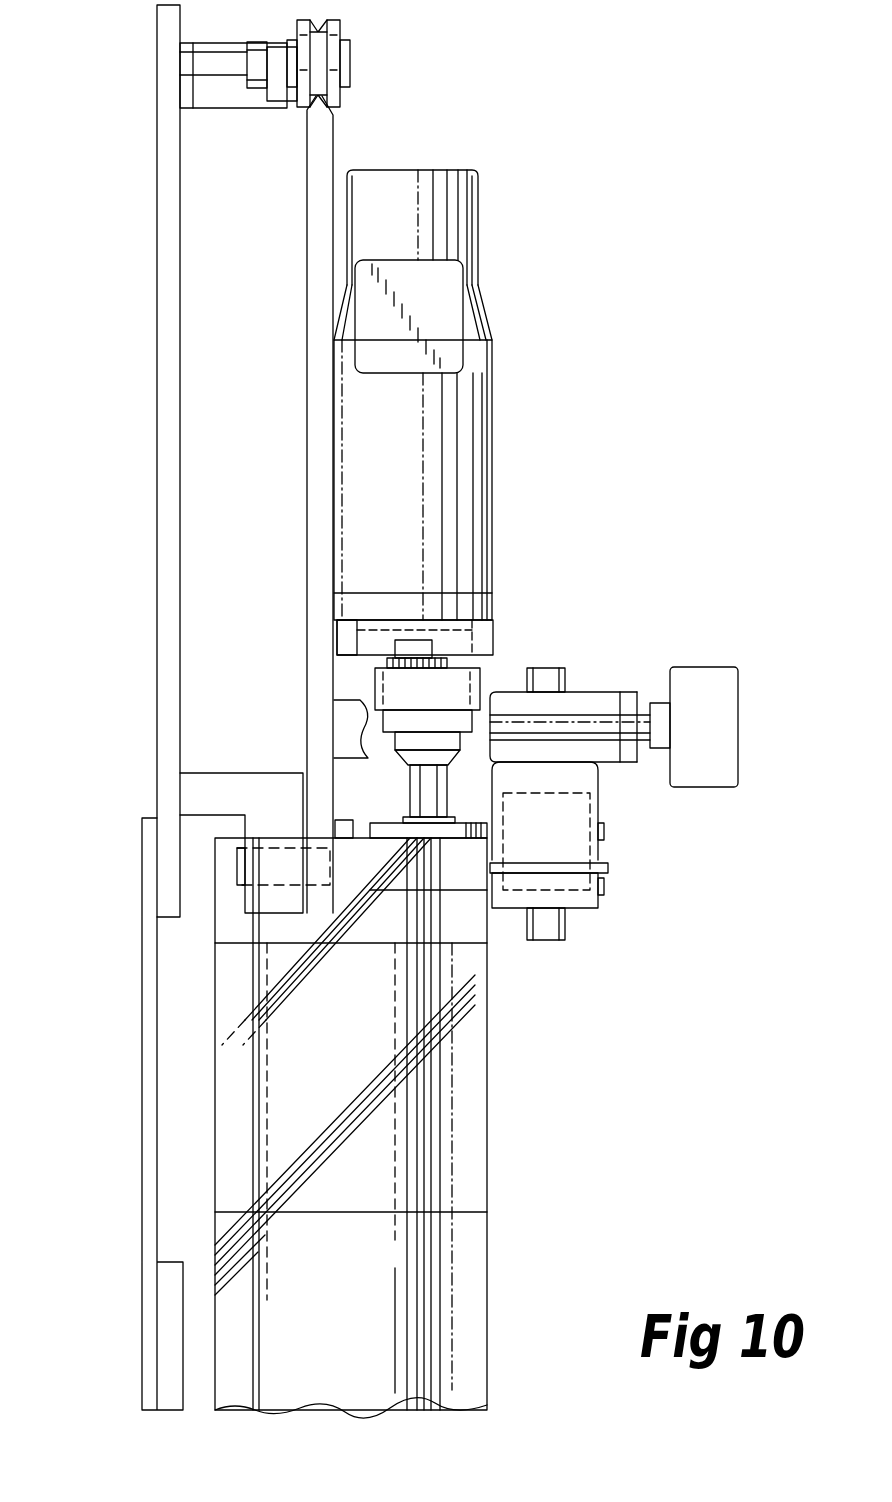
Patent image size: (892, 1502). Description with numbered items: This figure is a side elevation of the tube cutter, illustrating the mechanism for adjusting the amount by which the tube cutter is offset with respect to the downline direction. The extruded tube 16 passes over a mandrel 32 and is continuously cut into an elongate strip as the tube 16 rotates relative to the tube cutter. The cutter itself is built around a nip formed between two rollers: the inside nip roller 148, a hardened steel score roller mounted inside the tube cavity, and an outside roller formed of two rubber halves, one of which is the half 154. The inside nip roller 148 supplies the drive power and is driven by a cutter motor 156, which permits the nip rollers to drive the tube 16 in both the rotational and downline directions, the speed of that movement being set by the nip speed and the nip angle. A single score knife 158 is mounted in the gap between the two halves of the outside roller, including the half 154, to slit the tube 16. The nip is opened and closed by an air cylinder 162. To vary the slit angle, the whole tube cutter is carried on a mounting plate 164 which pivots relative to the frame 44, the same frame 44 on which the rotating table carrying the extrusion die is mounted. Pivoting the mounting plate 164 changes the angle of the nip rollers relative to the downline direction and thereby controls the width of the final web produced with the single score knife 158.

The tube 16 is at (487, 1310).
The mandrel 32 is at (453, 1212).
The frame 44 is at (158, 296).
The inside nip roller 148 is at (444, 880).
The half of outside nip roller 154 is at (585, 897).
The cutter motor 156 is at (484, 455).
The score knife 158 is at (606, 870).
The air cylinder 162 is at (725, 695).
The mounting plate 164 is at (323, 138).